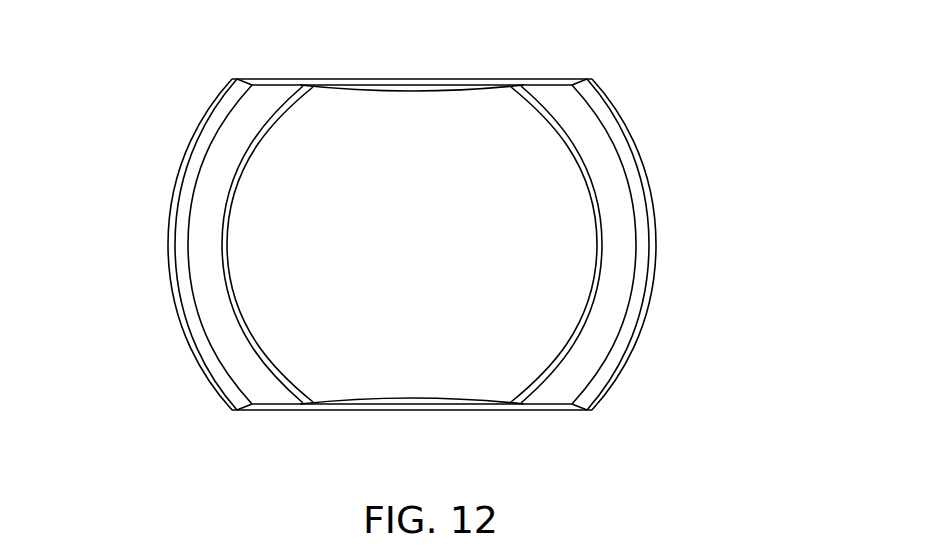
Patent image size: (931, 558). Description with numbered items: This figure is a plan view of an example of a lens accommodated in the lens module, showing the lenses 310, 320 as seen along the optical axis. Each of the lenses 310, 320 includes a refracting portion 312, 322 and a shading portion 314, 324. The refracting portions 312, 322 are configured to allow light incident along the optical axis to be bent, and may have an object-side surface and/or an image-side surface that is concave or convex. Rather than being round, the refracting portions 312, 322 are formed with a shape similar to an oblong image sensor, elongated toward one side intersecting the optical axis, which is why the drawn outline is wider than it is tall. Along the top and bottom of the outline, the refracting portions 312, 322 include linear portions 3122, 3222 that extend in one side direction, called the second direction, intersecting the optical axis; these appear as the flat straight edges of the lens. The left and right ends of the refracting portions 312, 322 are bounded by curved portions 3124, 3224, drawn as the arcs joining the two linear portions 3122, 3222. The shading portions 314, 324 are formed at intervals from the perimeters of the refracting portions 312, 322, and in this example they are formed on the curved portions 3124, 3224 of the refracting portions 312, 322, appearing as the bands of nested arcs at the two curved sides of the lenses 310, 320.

The lens 310 is at (434, 246).
The lens 320 is at (434, 246).
The refracting portion 312 is at (669, 244).
The refracting portion 322 is at (565, 313).
The shading portion 314 is at (151, 244).
The shading portion 324 is at (220, 326).
The linear portion 3122 is at (412, 246).
The linear portion 3222 is at (476, 79).
The curved portion 3124 is at (520, 244).
The curved portion 3224 is at (590, 187).